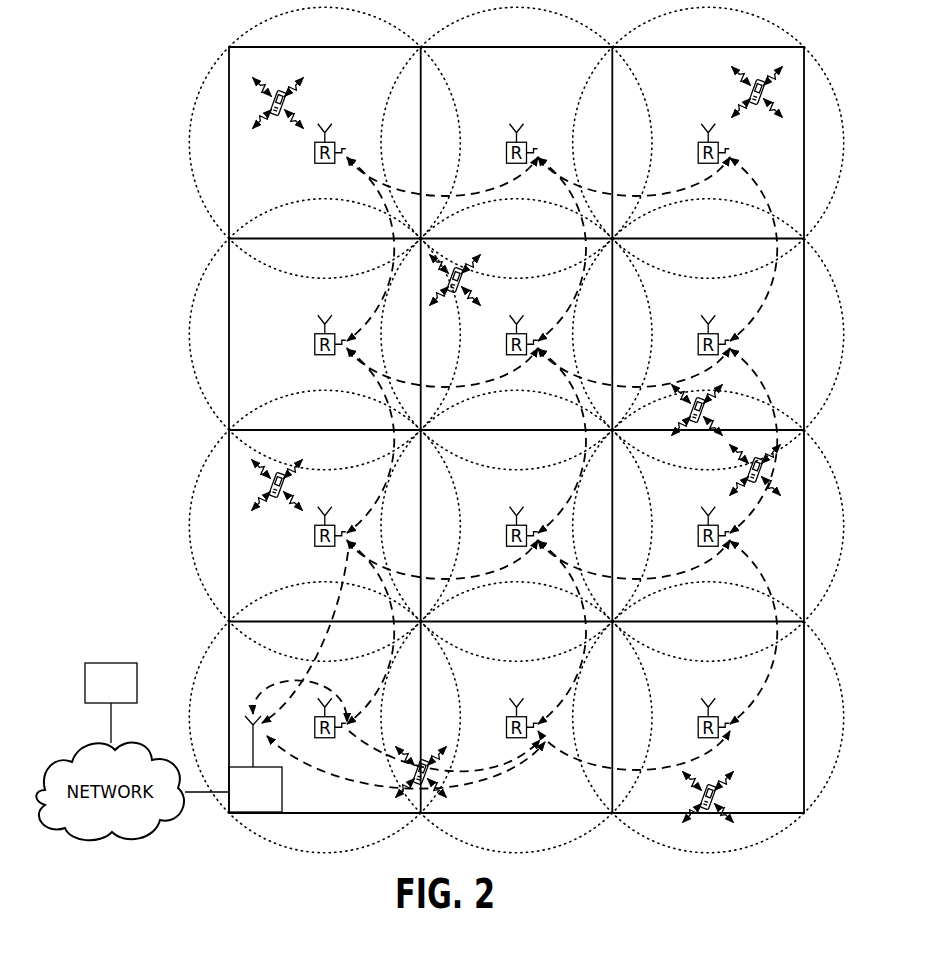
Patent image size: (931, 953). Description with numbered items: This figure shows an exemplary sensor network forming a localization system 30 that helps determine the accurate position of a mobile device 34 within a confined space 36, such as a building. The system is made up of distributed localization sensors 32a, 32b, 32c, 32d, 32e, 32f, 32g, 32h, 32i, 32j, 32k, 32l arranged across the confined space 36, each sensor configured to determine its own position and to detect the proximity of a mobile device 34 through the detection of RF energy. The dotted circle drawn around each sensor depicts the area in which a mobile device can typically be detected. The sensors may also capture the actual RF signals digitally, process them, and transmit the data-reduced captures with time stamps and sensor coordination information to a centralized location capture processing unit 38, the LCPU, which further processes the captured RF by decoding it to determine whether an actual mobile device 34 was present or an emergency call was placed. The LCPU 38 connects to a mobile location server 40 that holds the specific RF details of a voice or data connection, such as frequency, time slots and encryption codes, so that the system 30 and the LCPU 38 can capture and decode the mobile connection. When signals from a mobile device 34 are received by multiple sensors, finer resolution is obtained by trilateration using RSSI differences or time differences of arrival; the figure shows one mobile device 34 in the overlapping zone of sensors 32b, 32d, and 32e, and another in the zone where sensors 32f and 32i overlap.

The localization system 30 is at (152, 146).
The localization sensor 32a is at (316, 164).
The localization sensor 32b is at (506, 153).
The localization sensor 32c is at (698, 153).
The localization sensor 32d is at (316, 356).
The localization sensor 32e is at (506, 338).
The localization sensor 32f is at (698, 344).
The localization sensor 32g is at (316, 548).
The localization sensor 32h is at (506, 536).
The localization sensor 32i is at (698, 538).
The localization sensor 32j is at (315, 739).
The localization sensor 32k is at (505, 727).
The localization sensor 32l is at (698, 727).
The mobile device 34 is at (287, 103).
The confined space 36 is at (808, 238).
The location capture processing unit 38 is at (262, 812).
The mobile location server 40 is at (90, 663).